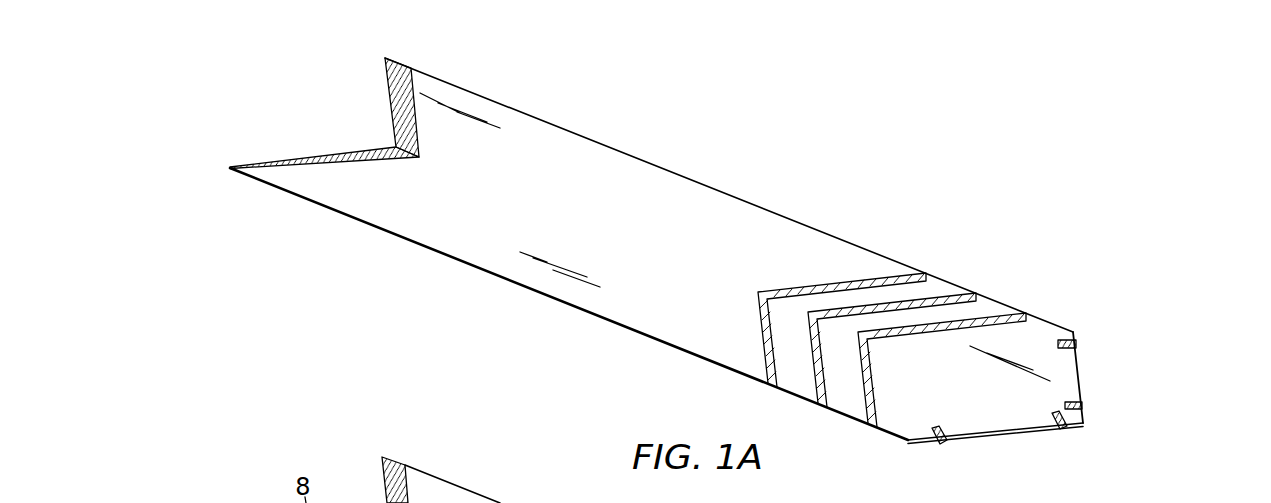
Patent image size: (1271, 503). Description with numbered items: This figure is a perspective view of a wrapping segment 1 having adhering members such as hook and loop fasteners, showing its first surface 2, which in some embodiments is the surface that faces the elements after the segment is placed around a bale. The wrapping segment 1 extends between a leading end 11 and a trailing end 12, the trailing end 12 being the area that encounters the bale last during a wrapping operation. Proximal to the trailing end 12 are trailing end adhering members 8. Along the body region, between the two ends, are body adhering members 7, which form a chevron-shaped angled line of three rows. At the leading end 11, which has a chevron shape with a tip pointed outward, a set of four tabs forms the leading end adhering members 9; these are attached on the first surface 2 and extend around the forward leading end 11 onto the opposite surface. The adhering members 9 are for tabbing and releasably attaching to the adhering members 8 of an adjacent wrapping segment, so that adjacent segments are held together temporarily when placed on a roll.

The wrapping segment 1 is at (304, 257).
The first surface 2 is at (680, 203).
The body adhering members 7 is at (997, 317).
The trailing end adhering members 8 is at (373, 150).
The leading end adhering members 9 is at (1077, 342).
The leading end 11 is at (1158, 332).
The trailing end 12 is at (208, 18).